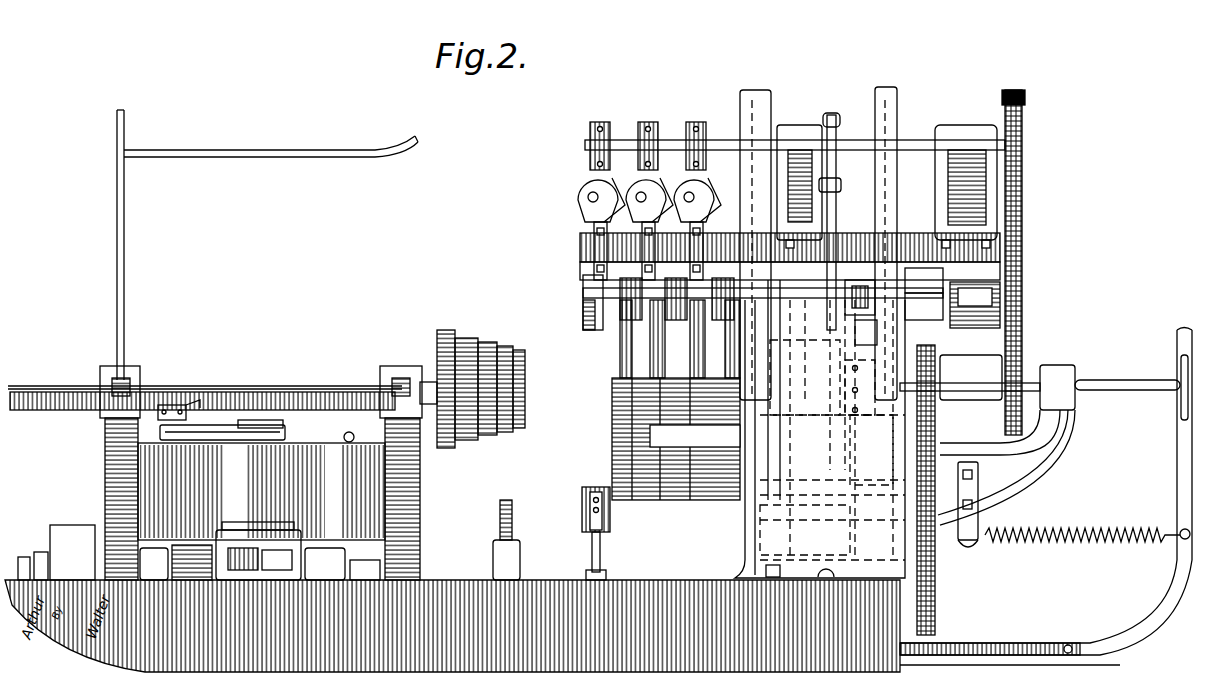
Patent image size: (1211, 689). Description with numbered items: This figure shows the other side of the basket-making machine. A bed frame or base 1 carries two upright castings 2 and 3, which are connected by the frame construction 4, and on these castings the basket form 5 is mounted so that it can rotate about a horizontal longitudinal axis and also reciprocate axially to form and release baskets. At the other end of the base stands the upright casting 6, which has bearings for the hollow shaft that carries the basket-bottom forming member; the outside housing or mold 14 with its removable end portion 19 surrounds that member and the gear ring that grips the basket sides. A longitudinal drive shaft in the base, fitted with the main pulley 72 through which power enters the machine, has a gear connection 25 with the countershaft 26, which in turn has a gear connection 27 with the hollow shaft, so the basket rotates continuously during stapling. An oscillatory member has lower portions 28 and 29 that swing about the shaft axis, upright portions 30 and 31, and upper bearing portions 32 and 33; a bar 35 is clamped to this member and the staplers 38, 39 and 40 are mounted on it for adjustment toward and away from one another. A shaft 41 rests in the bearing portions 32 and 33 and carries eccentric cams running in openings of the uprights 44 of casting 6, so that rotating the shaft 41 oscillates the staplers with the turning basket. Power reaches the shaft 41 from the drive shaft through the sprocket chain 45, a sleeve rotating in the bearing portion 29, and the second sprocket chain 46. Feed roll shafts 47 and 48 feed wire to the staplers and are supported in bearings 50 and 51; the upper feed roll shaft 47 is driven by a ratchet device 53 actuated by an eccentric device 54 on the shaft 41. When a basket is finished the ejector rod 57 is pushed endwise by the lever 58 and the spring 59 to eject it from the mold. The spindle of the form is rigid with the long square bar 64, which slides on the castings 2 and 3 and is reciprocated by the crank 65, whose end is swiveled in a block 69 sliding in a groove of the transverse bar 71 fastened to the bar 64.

The bed frame or base 1 is at (452, 626).
The upright casting 2 is at (418, 484).
The upright casting 3 is at (112, 478).
The frame construction 4 is at (261, 486).
The basket form 5 is at (470, 342).
The upright casting 6 is at (760, 530).
The outside housing or mold 14 is at (763, 325).
The removable end portion 19 is at (612, 402).
The gear connection 25 is at (862, 538).
The countershaft 26 is at (805, 530).
The gear connection 27 is at (838, 425).
The lower portion 28 is at (805, 392).
The lower portion 29 is at (970, 377).
The upright portion 30 is at (812, 205).
The upright portion 31 is at (948, 186).
The upper bearing portion 32 is at (799, 182).
The upper bearing portion 33 is at (966, 182).
The bar 35 is at (972, 242).
The stapler 38 is at (578, 200).
The stapler 39 is at (598, 210).
The stapler 40 is at (690, 240).
The shaft 41 is at (672, 140).
The uprights 44 is at (752, 92).
The sprocket chain 45 is at (935, 560).
The sprocket chain 46 is at (1022, 340).
The upper feed roll shaft 47 is at (924, 280).
The feed roll shaft 48 is at (924, 306).
The bearing 50 is at (1000, 298).
The bearing 51 is at (866, 339).
The ratchet device 53 is at (865, 270).
The eccentric device 54 is at (832, 115).
The knock-out or ejector rod 57 is at (1115, 380).
The lever 58 is at (1182, 470).
The spring 59 is at (1062, 530).
The long square bar 64 is at (265, 394).
The crank 65 is at (216, 427).
The block 69 is at (170, 406).
The transverse bar 71 is at (190, 403).
The main pulley 72 is at (72, 542).